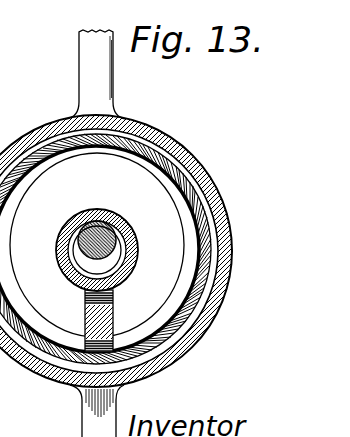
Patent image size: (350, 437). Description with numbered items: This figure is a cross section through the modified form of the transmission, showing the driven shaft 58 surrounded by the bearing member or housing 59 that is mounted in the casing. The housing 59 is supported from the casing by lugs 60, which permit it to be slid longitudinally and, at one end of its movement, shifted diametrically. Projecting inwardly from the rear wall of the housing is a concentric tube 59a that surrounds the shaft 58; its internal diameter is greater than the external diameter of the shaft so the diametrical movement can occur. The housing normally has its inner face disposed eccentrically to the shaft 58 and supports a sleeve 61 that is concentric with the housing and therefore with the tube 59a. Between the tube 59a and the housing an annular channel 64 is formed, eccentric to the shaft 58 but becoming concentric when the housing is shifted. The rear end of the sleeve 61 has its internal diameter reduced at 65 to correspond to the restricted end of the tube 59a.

The driven shaft 58 is at (78, 216).
The bearing member or housing 59 is at (213, 308).
The concentric tube 59a is at (64, 270).
The lugs 60 is at (100, 75).
The sleeve 61 is at (147, 155).
The annular channel 64 is at (186, 169).
The reduced internal diameter of the sleeve 65 is at (173, 263).